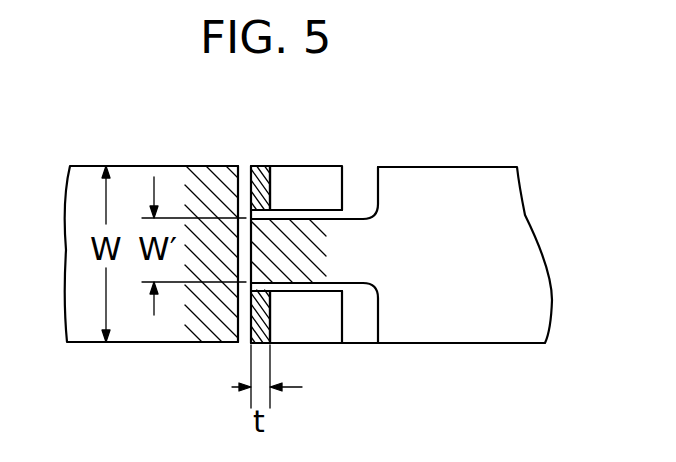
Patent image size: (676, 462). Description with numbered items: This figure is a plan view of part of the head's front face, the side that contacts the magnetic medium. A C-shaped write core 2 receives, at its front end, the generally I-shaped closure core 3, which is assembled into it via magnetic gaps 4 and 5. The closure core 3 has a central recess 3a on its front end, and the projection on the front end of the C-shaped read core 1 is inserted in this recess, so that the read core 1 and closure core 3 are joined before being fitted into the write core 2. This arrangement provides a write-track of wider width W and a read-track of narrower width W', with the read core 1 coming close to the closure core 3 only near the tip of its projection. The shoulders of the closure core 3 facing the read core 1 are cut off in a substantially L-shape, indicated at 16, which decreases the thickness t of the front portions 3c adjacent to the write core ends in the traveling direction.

The read core 1 is at (490, 177).
The write core 2 is at (145, 345).
The closure core 3 is at (313, 356).
The central recess 3a is at (346, 289).
The front portions 3c is at (260, 166).
The magnetic gap 4 is at (243, 260).
The magnetic gap 5 is at (243, 172).
The L-shaped cut-off 16 is at (323, 177).